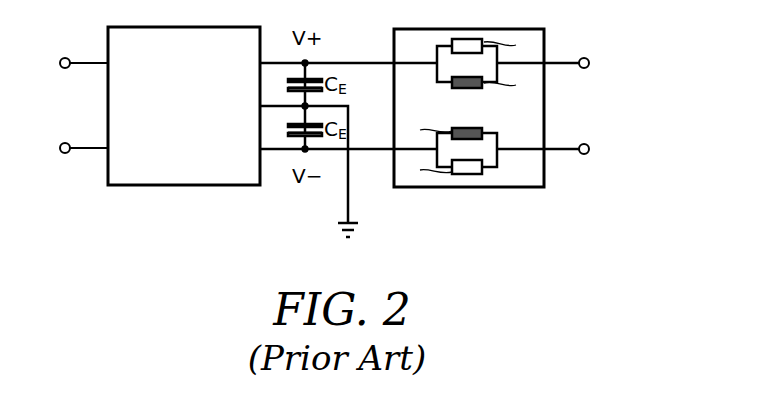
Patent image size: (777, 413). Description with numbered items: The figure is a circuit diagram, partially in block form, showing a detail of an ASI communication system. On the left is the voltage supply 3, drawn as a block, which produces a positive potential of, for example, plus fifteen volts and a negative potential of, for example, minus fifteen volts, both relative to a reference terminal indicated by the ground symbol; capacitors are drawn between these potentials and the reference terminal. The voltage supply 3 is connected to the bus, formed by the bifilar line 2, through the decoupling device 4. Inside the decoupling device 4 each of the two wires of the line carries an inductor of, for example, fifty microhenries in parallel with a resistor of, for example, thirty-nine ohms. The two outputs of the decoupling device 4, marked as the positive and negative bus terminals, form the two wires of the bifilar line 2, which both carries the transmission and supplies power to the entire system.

The bifilar line 2 is at (566, 79).
The voltage supply 3 is at (185, 158).
The decoupling device 4 is at (449, 187).